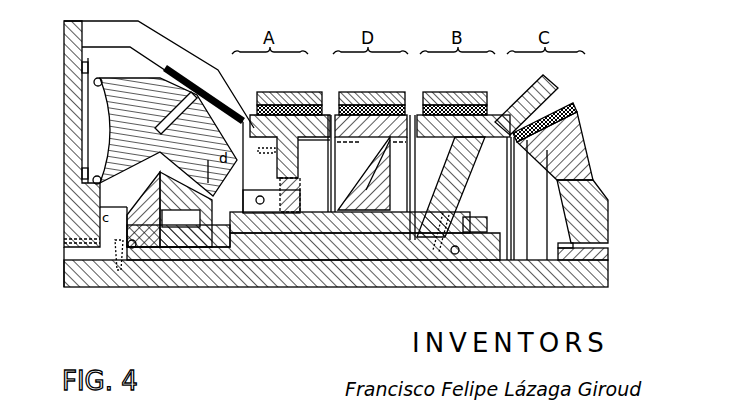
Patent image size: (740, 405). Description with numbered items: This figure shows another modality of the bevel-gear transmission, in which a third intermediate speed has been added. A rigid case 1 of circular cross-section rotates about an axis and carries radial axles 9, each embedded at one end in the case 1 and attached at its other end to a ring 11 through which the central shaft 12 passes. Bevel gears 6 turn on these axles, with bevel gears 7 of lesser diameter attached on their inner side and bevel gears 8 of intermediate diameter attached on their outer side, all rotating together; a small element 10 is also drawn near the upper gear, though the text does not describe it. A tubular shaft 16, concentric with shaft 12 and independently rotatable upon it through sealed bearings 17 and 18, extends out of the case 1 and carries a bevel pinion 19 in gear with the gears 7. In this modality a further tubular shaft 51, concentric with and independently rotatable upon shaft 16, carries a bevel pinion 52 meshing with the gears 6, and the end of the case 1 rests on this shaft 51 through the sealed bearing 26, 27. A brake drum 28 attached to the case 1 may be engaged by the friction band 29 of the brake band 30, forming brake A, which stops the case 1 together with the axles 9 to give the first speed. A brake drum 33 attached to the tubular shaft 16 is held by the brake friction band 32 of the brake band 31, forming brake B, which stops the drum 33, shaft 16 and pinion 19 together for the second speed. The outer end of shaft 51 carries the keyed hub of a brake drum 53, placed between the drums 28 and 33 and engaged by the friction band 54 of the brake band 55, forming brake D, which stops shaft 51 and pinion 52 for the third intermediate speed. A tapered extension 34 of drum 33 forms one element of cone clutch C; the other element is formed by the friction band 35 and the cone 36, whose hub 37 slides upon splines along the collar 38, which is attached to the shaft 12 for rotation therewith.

The rigid case 1 is at (143, 45).
The bevel gears 6 is at (208, 160).
The bevel gears 7 is at (128, 180).
The bevel gears 8 is at (172, 118).
The radial axles 9 is at (77, 147).
The roller 10 is at (101, 80).
The ring 11 is at (87, 233).
The shaft 12 is at (107, 273).
The tubular shaft 16 is at (330, 245).
The sealed bearing 17 is at (119, 245).
The sealed bearing 18 is at (470, 217).
The bevel pinion 19 is at (147, 200).
The sealed bearing 26 is at (260, 196).
The sealed bearing 27 is at (300, 200).
The brake drum 28 is at (260, 120).
The friction band 29 is at (282, 105).
The brake band 30 is at (304, 92).
The brake band 31 is at (437, 100).
The brake friction band 32 is at (455, 105).
The brake drum 33 is at (472, 100).
The tapered extension 34 is at (527, 103).
The friction band 35 is at (542, 123).
The cone 36 is at (560, 112).
The hub 37 is at (588, 230).
The collar 38 is at (590, 258).
The tubular shaft 51 is at (287, 230).
The bevel pinion 52 is at (220, 228).
The brake drum 53 is at (356, 122).
The friction band 54 is at (376, 105).
The brake band 55 is at (390, 92).